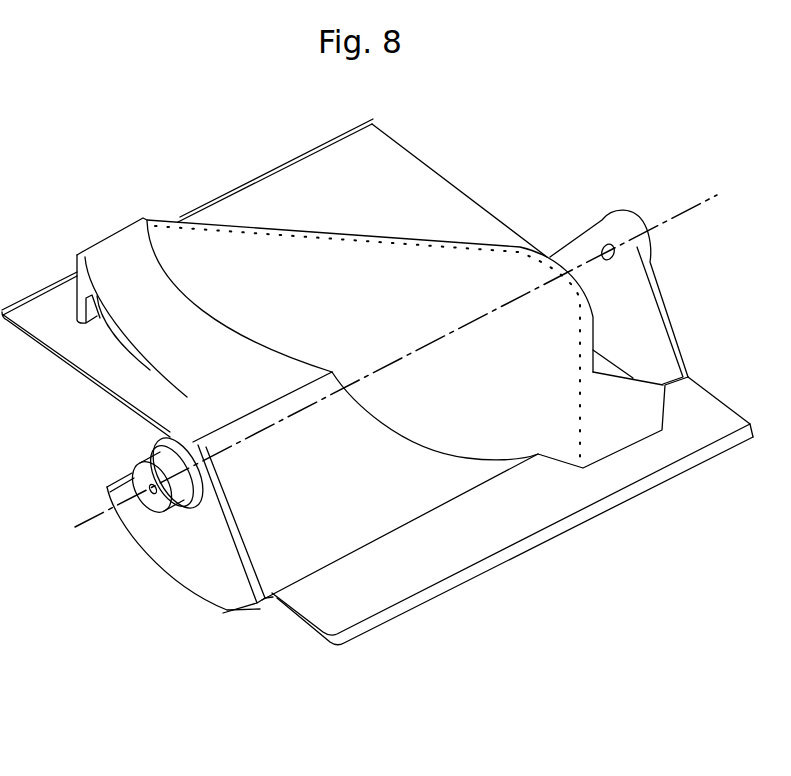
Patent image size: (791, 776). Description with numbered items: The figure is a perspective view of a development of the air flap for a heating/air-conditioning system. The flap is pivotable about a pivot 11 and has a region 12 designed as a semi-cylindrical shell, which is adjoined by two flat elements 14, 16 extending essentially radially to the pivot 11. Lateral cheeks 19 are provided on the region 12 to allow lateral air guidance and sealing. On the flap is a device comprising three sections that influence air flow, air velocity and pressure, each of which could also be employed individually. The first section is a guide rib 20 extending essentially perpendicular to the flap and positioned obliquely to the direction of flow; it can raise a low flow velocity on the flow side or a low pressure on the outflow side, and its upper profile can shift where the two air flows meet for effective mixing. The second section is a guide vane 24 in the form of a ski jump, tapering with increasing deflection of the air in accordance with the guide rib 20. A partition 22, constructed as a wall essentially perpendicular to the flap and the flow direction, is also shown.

The pivot 11 is at (150, 507).
The region of the air flap 12 is at (217, 615).
The flat element 14 is at (410, 610).
The flat element 16 is at (77, 352).
The lateral cheek 19 is at (170, 557).
The guide rib 20 is at (438, 238).
The partition 22 is at (627, 423).
The guide vane 24 is at (113, 277).